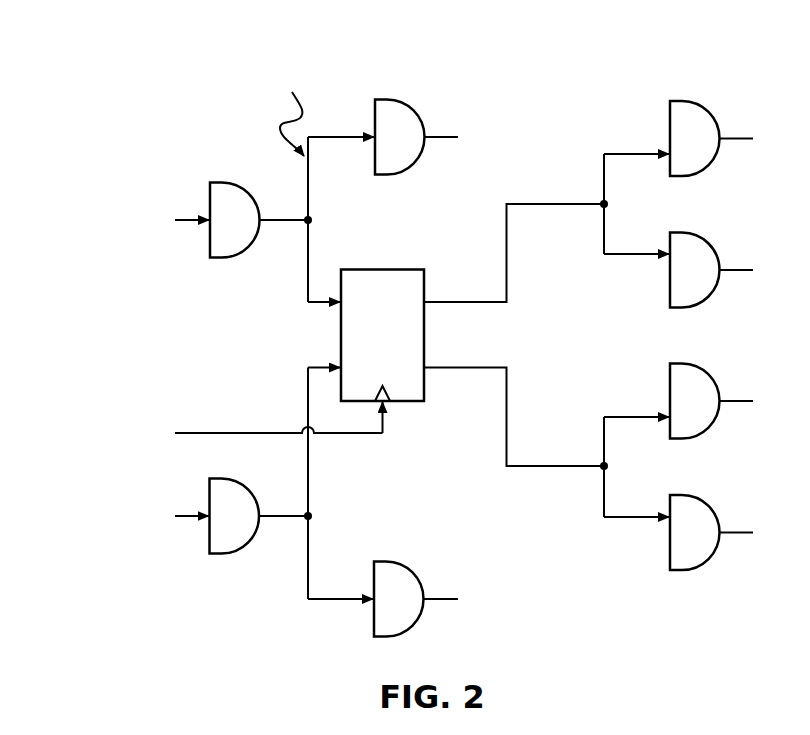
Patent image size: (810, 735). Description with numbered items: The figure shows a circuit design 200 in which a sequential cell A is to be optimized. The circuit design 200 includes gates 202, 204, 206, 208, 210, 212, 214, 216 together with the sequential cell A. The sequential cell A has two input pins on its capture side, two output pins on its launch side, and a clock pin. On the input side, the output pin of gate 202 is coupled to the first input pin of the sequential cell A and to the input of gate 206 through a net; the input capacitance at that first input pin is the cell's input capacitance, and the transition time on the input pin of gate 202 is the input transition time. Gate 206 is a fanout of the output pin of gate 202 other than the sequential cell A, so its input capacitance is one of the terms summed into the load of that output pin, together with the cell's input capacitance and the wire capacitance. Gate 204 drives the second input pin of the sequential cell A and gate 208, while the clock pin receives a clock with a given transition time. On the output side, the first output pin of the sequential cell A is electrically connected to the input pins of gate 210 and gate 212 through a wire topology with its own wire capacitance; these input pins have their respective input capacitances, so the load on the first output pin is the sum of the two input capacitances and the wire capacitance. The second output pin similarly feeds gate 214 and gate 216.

The circuit design 200 is at (132, 104).
The gate 202 is at (241, 220).
The gate 204 is at (241, 516).
The gate 206 is at (383, 137).
The gate 208 is at (383, 599).
The gate 210 is at (678, 138).
The gate 212 is at (678, 270).
The gate 214 is at (678, 401).
The gate 216 is at (678, 532).